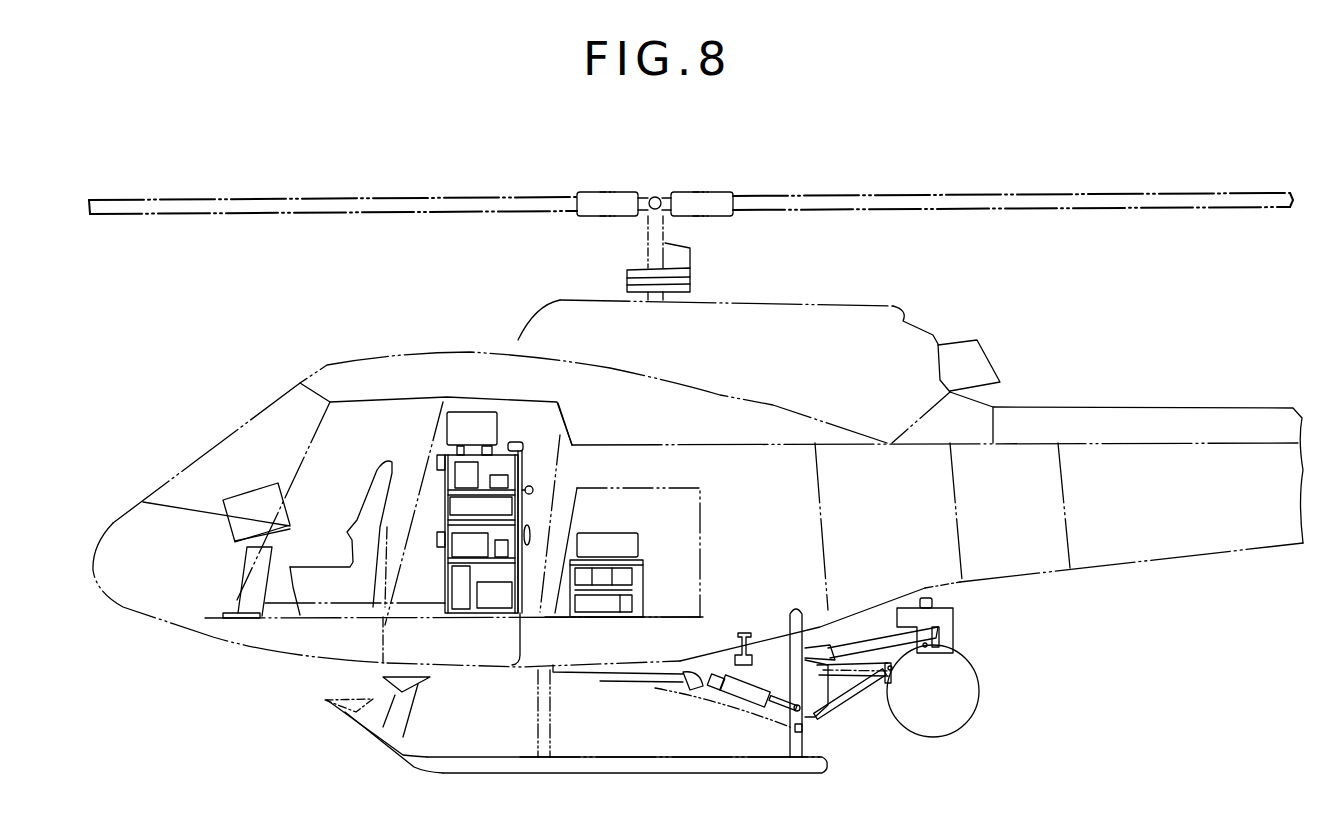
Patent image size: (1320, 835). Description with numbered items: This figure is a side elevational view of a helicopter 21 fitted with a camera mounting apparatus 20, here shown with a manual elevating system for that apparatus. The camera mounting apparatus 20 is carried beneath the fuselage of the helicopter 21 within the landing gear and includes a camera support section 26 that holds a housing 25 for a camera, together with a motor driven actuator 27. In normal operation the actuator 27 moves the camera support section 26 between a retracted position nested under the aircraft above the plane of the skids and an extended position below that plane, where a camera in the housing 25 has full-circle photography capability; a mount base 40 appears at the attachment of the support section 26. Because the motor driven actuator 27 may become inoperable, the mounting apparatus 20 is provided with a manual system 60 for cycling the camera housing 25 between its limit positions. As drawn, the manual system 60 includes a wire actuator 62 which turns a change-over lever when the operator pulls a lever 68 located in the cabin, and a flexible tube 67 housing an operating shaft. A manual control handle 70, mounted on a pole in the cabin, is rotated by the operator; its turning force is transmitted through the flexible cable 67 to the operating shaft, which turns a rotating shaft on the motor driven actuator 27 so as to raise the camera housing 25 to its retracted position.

The camera mounting apparatus 20 is at (901, 600).
The helicopter 21 is at (614, 188).
The housing 25 is at (957, 730).
The camera support section 26 is at (868, 633).
The motor driven actuator 27 is at (723, 712).
The mount base 40 is at (957, 617).
The manual system 60 is at (762, 680).
The wire actuator 62 is at (519, 643).
The flexible tube 67 is at (415, 712).
The lever 68 is at (525, 523).
The manual control handle 70 is at (527, 484).